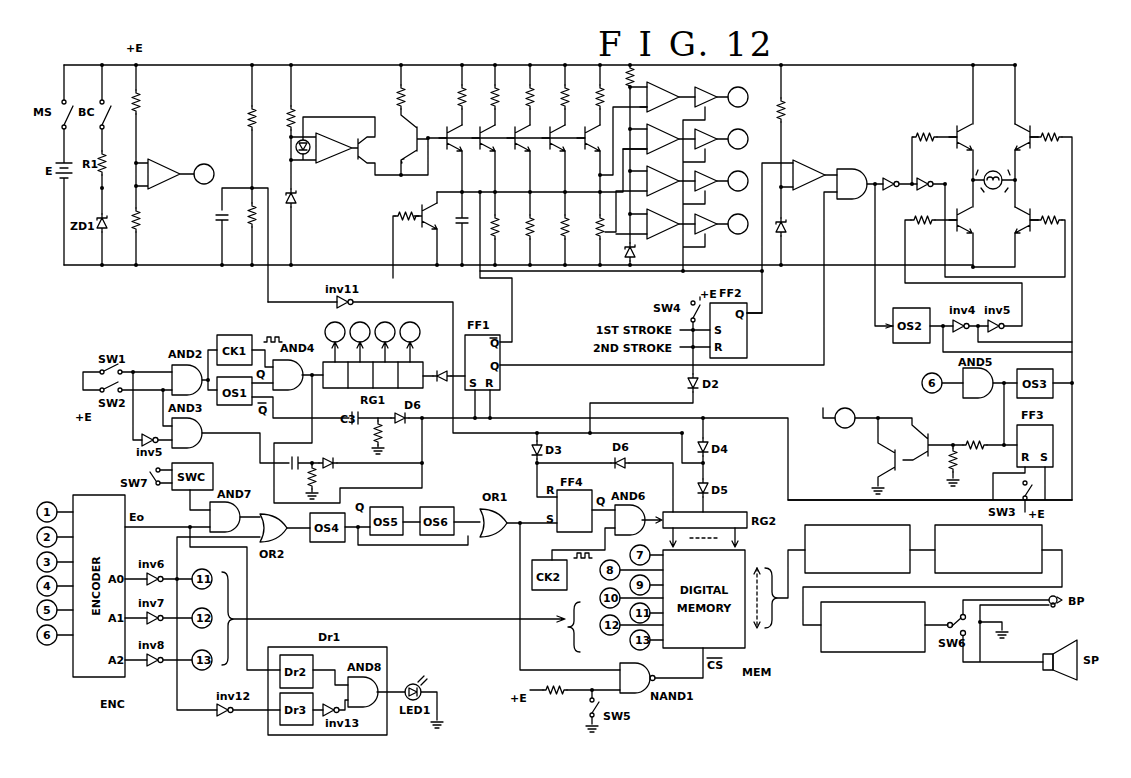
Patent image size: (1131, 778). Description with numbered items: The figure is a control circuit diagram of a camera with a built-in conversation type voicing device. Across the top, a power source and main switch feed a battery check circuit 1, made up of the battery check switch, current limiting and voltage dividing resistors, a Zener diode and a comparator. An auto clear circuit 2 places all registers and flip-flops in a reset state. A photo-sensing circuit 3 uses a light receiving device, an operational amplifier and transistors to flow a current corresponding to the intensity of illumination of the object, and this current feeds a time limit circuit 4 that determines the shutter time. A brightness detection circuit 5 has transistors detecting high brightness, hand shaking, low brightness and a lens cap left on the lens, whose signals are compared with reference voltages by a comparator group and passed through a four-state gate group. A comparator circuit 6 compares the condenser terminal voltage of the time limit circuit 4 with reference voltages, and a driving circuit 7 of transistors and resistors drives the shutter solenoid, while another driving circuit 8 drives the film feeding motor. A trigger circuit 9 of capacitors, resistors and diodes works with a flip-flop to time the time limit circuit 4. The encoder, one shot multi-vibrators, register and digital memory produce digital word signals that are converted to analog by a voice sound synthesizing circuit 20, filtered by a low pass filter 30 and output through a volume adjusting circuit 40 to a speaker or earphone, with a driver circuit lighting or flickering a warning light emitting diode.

The battery check circuit 1 is at (150, 137).
The auto clear circuit 2 is at (265, 162).
The photo-sensing circuit 3 is at (347, 104).
The time limit circuit 4 is at (466, 123).
The brightness detection circuit 5 is at (541, 58).
The comparator circuit 6 is at (822, 136).
The driving circuit 7 is at (955, 118).
The driving circuit 8 is at (838, 447).
The trigger circuit 9 is at (313, 410).
The voice sound synthesizing circuit 20 is at (840, 520).
The low pass filter 30 is at (944, 522).
The volume adjusting circuit 40 is at (838, 655).